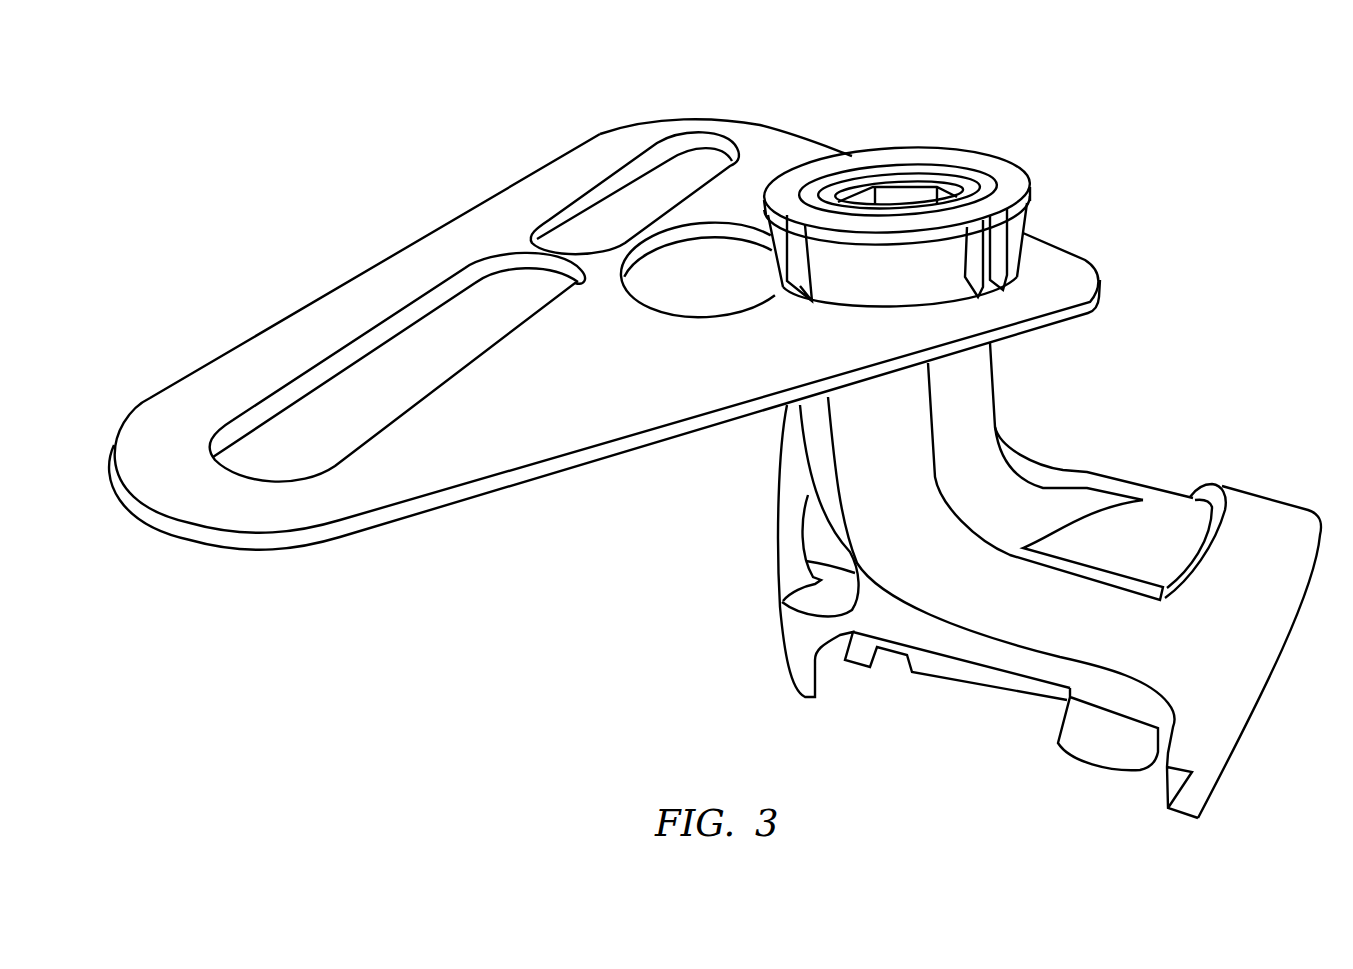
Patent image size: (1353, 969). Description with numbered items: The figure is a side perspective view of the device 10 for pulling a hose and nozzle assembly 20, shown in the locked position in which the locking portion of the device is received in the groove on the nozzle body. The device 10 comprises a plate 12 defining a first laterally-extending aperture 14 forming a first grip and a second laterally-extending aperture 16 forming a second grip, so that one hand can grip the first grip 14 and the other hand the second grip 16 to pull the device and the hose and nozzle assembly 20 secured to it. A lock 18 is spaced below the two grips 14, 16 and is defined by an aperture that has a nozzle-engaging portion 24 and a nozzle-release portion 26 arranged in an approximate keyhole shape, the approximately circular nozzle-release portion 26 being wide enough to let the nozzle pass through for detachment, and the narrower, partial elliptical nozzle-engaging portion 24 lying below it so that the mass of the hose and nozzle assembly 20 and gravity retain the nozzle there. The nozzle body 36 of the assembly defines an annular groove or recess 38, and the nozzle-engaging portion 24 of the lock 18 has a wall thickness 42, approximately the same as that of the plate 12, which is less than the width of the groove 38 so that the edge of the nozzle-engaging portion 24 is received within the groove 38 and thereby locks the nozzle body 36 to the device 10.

The device for pulling a hose and nozzle assembly 10 is at (1075, 110).
The plate 12 is at (592, 450).
The first laterally-extending aperture 14 is at (383, 330).
The second laterally-extending aperture 16 is at (612, 176).
The lock 18 is at (635, 301).
The hose and nozzle assembly 20 is at (861, 211).
The nozzle-engaging portion 24 is at (854, 312).
The nozzle-release portion 26 is at (726, 228).
The nozzle body 36 is at (900, 474).
The annular groove or recess 38 is at (798, 298).
The wall thickness 42 is at (1052, 255).